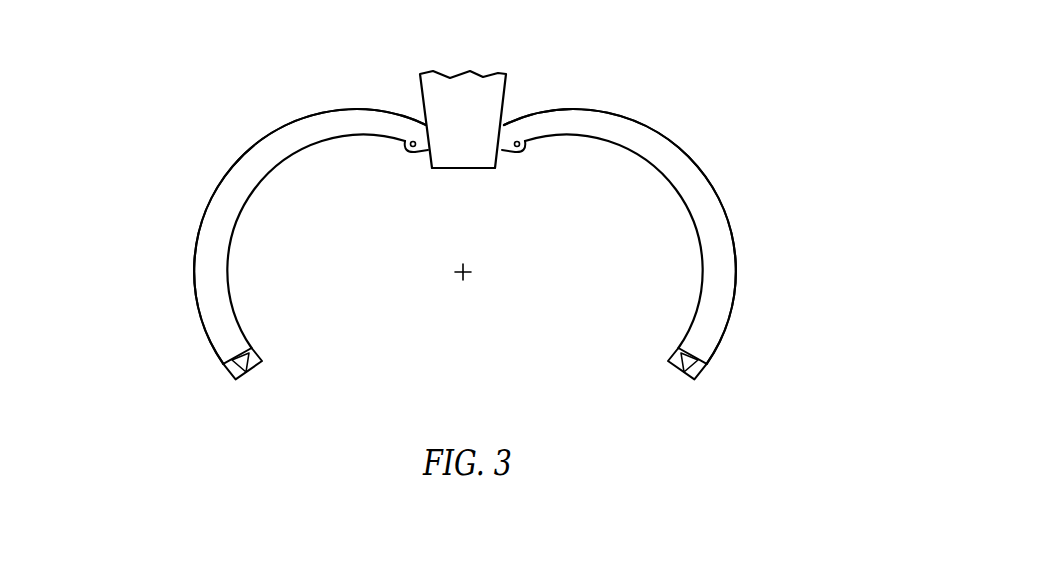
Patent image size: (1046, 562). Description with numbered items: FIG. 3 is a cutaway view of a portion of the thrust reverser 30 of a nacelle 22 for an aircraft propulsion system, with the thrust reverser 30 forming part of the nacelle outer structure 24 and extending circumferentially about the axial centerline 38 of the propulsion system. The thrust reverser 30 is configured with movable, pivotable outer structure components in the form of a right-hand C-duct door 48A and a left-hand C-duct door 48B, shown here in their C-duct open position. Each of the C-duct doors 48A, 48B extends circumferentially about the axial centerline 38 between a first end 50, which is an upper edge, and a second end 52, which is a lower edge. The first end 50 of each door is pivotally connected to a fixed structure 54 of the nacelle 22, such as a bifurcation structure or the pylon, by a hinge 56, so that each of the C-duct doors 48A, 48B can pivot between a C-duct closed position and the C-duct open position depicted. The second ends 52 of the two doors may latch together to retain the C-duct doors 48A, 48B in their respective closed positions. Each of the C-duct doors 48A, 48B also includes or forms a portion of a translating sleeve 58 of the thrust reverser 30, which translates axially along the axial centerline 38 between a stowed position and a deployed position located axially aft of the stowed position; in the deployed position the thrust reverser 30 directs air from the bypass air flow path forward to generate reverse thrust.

The nacelle 22 is at (670, 76).
The nacelle outer structure 24 is at (727, 175).
The thrust reverser 30 is at (243, 136).
The axial centerline 38 is at (465, 275).
The right-hand C-duct door 48A is at (718, 253).
The left-hand C-duct door 48B is at (212, 253).
The first end 50 is at (401, 103).
The second end 52 is at (248, 392).
The fixed structure 54 is at (458, 86).
The hinge 56 is at (423, 148).
The translating sleeve 58 is at (205, 208).